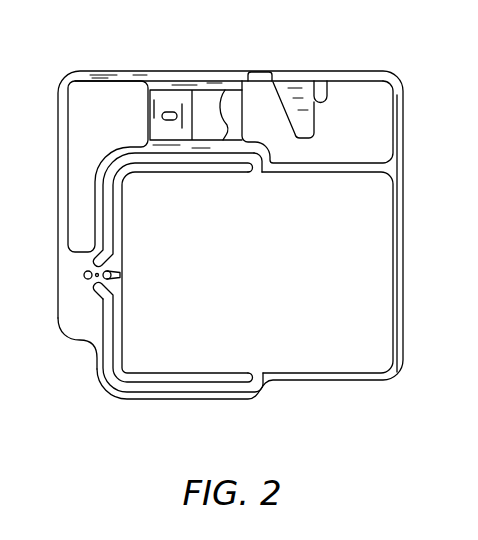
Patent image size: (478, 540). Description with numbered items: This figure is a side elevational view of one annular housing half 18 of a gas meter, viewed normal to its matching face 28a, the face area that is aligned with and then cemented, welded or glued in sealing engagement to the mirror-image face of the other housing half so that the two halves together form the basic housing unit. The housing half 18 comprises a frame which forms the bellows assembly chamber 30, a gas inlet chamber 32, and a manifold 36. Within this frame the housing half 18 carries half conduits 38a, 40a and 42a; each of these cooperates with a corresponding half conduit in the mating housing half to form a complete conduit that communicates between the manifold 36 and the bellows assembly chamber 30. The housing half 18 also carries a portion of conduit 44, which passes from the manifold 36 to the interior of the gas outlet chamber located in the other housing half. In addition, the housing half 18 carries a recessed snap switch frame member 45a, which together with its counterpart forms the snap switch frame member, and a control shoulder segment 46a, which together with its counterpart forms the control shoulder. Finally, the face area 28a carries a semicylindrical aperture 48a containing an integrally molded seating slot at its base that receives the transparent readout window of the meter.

The housing half 18 is at (217, 62).
The matching face 28a is at (152, 80).
The bellows assembly chamber 30 is at (339, 341).
The gas inlet chamber 32 is at (352, 99).
The manifold 36 is at (80, 313).
The half conduit 38a is at (108, 214).
The half conduit 40a is at (243, 386).
The half conduit 42a is at (122, 272).
The conduit 44 is at (85, 273).
The recessed snap switch frame member 45a is at (172, 98).
The control shoulder segment 46a is at (326, 97).
The semicylindrical aperture 48a is at (263, 72).